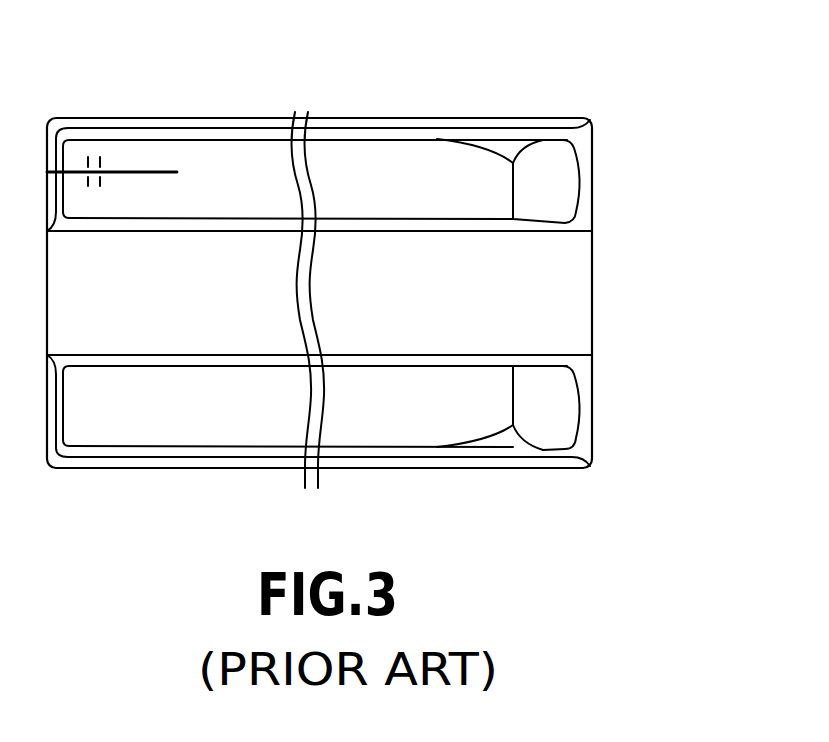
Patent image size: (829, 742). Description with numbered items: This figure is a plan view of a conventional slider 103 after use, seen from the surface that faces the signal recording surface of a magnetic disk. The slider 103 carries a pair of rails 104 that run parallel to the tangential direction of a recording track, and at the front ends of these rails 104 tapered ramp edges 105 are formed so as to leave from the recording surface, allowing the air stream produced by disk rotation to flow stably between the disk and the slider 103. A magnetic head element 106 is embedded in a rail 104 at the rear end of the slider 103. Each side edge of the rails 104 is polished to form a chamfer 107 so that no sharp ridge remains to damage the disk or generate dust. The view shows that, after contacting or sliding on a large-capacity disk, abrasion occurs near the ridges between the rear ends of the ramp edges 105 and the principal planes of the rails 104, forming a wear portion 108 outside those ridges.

The slider 103 is at (228, 120).
The rails 104 is at (423, 177).
The tapered ramp edges 105 is at (553, 182).
The magnetic head element 106 is at (97, 152).
The chamfer 107 is at (548, 133).
The connecting curve 108 is at (508, 148).